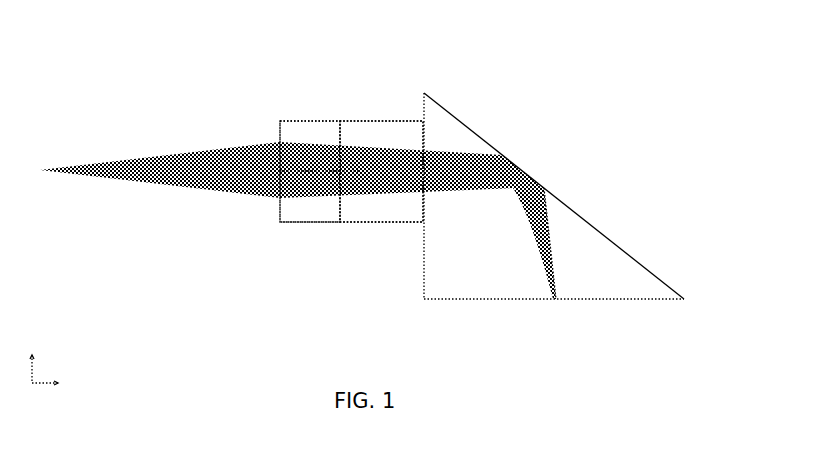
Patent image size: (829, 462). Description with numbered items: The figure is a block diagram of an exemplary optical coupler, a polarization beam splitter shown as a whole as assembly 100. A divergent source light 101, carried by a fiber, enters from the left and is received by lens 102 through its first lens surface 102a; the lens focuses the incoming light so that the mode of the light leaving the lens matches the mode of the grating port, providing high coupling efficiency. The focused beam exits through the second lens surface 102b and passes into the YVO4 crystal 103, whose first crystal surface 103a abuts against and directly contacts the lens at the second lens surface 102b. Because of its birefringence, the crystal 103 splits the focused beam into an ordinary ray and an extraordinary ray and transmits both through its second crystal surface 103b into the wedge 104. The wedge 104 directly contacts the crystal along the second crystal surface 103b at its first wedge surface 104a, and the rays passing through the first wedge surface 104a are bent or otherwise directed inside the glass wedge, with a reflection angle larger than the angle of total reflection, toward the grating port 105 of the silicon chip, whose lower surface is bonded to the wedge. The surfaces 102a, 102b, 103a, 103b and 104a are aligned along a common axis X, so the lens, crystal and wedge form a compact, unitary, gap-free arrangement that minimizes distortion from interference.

The optical system 100 is at (101, 86).
The divergent source light 101 is at (41, 178).
The lens 102 is at (305, 157).
The first lens surface 102a is at (269, 211).
The second lens surface 102b is at (331, 205).
The YVO4 crystal 103 is at (380, 119).
The first crystal surface 103a is at (350, 196).
The second crystal surface 103b is at (430, 133).
The wedge 104 is at (514, 197).
The first wedge surface 104a is at (415, 274).
The grating port 105 is at (552, 302).